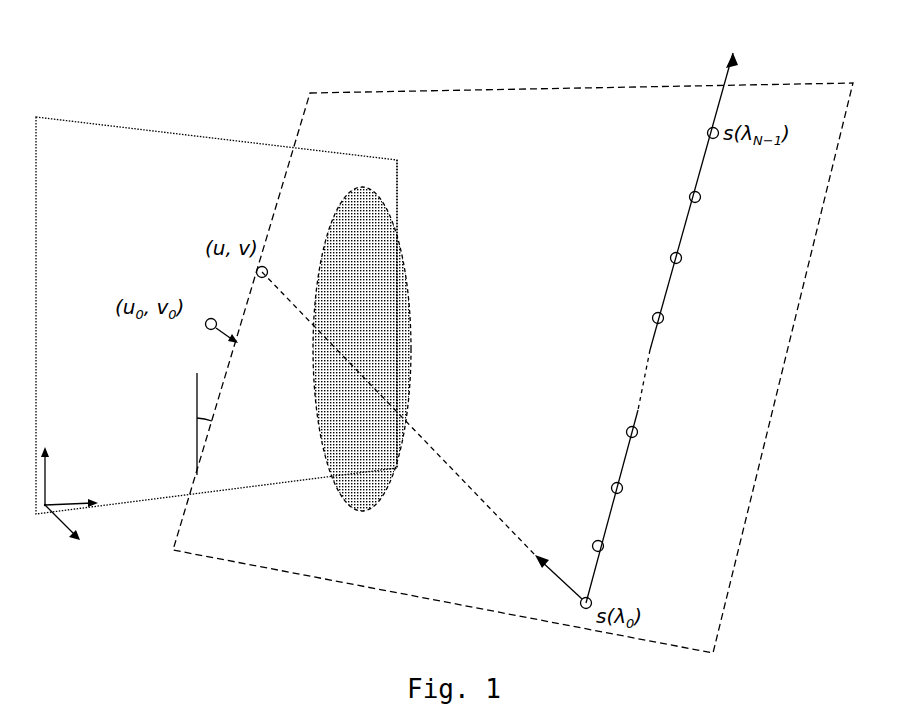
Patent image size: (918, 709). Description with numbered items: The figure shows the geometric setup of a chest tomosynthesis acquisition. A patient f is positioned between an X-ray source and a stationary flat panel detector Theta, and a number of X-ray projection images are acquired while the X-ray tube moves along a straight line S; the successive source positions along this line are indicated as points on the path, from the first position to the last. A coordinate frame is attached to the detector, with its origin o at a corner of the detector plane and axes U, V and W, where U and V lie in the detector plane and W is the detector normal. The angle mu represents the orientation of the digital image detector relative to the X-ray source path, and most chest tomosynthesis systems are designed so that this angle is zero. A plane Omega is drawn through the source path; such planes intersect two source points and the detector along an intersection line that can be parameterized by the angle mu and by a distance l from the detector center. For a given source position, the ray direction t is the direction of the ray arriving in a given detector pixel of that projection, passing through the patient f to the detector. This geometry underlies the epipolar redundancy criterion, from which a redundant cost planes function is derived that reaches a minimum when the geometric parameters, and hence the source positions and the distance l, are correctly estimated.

The flat panel detector Theta is at (216, 315).
The plane Omega is at (513, 368).
The patient f is at (362, 349).
The distance from the detector center l is at (222, 323).
The angle mu is at (205, 424).
The straight line source path S is at (660, 324).
The ray direction t is at (426, 570).
The U axis U is at (71, 491).
The V axis V is at (50, 465).
The W axis W is at (62, 535).
The origin o is at (13, 512).